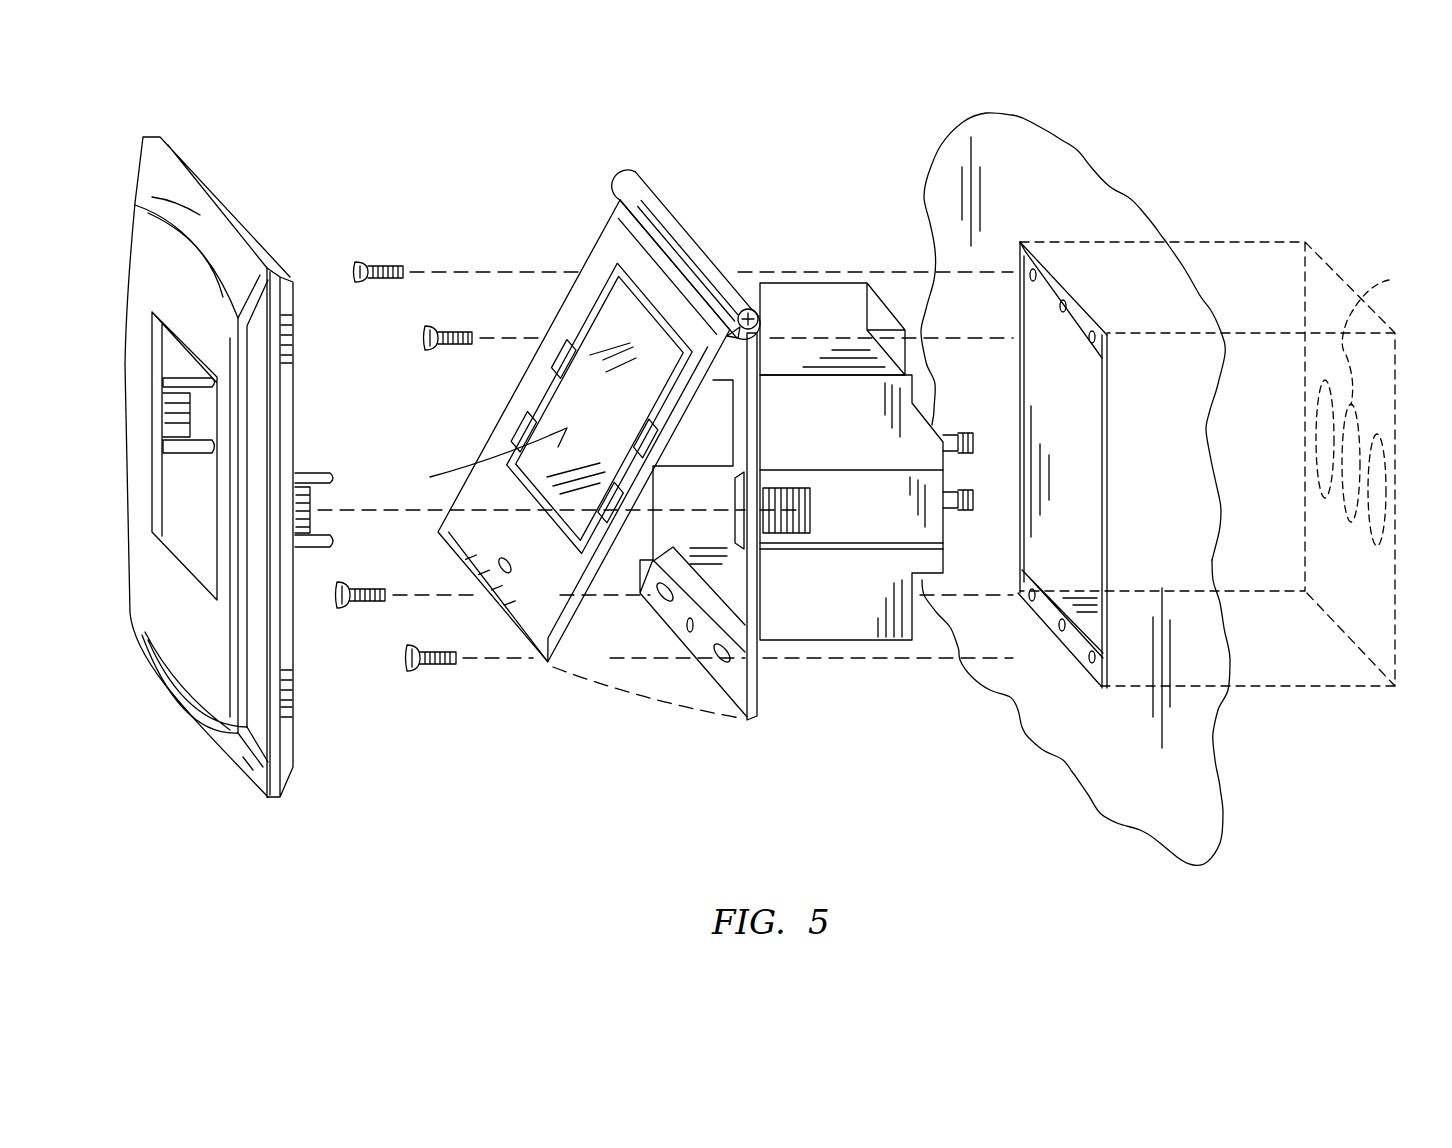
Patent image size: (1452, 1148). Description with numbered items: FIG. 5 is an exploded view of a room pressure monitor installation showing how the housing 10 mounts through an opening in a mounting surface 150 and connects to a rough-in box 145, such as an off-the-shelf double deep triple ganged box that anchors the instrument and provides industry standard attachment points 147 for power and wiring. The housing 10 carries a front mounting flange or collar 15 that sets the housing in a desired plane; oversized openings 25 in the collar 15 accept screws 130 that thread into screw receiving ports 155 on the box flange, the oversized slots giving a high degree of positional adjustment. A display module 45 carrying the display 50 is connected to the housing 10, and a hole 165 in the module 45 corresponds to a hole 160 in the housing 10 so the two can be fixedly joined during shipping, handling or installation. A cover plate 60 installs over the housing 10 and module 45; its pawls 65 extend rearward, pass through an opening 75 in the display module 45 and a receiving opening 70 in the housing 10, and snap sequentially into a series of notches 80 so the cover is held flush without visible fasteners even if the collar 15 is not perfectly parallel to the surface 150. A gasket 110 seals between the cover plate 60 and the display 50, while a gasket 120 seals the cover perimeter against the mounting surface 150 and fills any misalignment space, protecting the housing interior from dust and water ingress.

The housing 10 is at (842, 438).
The front mounting flange (collar) 15 is at (749, 690).
The oversized openings 25 is at (722, 660).
The display module 45 is at (607, 233).
The display 50 is at (479, 461).
The cover plate 60 is at (187, 712).
The pawl 65 is at (312, 475).
The receiving opening 70 is at (736, 496).
The opening 75 is at (543, 388).
The series of notches 80 is at (797, 508).
The gasket 110 is at (633, 303).
The gasket 120 is at (295, 737).
The screws 130 is at (363, 255).
The rough-in box 145 is at (1203, 242).
The attachment points 147 is at (1379, 403).
The mounting surface 150 is at (1055, 177).
The screw receiving ports 155 is at (1060, 305).
The hole 160 is at (492, 560).
The hole 165 is at (687, 625).